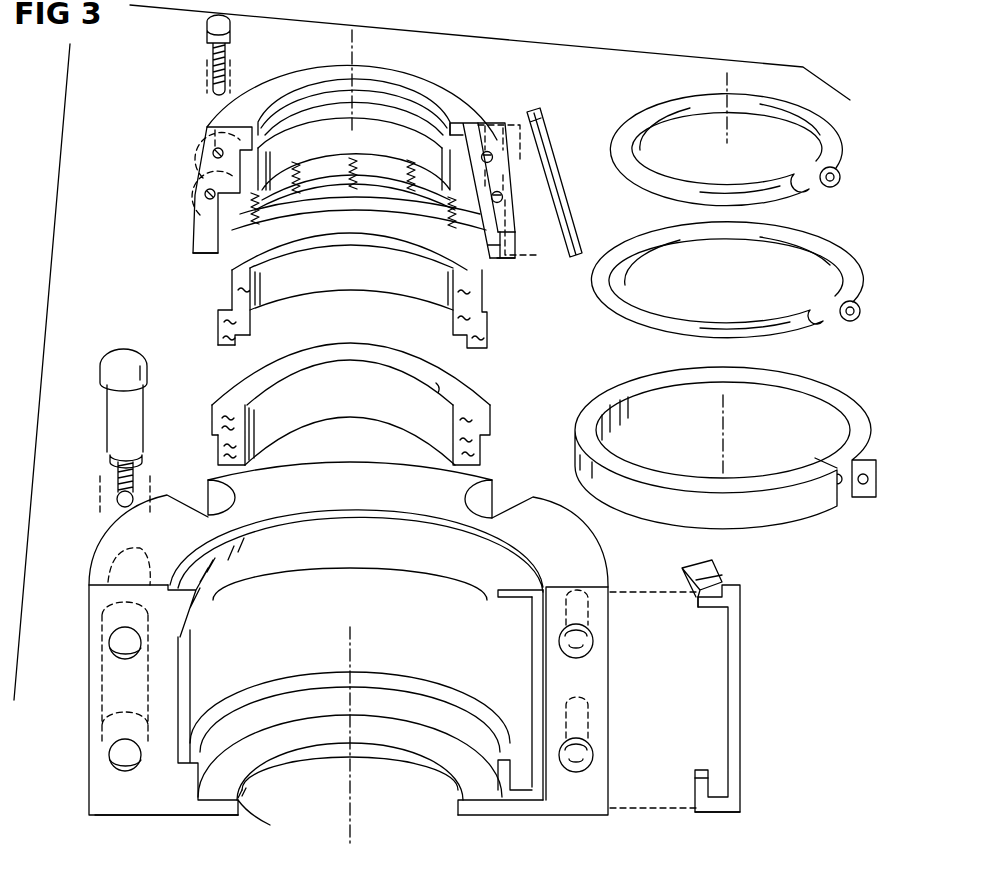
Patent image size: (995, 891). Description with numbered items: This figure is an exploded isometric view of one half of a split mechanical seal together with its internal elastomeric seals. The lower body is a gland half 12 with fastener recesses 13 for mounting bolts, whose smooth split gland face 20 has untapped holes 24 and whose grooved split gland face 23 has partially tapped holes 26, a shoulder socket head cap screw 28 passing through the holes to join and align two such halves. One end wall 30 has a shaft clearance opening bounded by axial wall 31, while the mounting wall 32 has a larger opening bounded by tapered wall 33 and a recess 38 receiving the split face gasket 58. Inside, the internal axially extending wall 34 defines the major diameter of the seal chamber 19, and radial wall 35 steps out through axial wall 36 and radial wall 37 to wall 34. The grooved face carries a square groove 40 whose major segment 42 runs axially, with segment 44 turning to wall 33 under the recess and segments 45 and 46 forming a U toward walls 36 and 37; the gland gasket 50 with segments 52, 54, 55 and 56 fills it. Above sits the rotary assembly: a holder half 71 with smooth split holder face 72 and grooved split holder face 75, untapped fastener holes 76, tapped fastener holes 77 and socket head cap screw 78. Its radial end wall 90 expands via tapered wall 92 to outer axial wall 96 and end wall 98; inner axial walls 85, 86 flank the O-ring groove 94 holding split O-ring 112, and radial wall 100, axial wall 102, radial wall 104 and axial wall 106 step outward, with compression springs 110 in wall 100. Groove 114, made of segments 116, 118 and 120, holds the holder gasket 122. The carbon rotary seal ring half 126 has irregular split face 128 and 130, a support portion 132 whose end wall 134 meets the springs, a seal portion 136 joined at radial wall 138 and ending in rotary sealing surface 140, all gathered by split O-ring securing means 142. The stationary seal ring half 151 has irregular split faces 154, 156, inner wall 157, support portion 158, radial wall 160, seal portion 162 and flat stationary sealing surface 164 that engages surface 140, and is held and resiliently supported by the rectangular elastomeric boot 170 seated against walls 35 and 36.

The gland half 12 is at (100, 540).
The fastener recess 13 is at (207, 497).
The seal chamber 19 is at (403, 652).
The smooth split gland face 20 is at (110, 820).
The grooved split gland face 23 is at (576, 810).
The untapped hole 24 is at (115, 653).
The partially tapped hole 26 is at (600, 652).
The shoulder socket head cap screw 28 is at (117, 432).
The end wall 30 is at (168, 818).
The axial wall 31 is at (246, 796).
The mounting wall 32 is at (92, 553).
The wall 33 is at (196, 600).
The internal axially extending wall 34 is at (190, 690).
The radial wall 35 is at (272, 752).
The axial wall 36 is at (278, 718).
The radial wall 37 is at (290, 690).
The recess 38 is at (298, 515).
The groove 40 is at (540, 693).
The major groove segment 42 is at (535, 712).
The groove segment 44 is at (513, 597).
The groove segment 45 is at (535, 802).
The groove segment 46 is at (506, 770).
The gland gasket 50 is at (744, 684).
The gasket segment 52 is at (742, 712).
The gasket segment 54 is at (715, 606).
The gasket segment 55 is at (718, 808).
The gasket segment 56 is at (700, 788).
The face gasket 58 is at (716, 576).
The holder half 71 is at (300, 67).
The smooth split holder face 72 is at (205, 238).
The grooved split holder face 75 is at (517, 256).
The untapped fastener hole 76 is at (212, 153).
The tapped fastener hole 77 is at (492, 156).
The socket head cap screw 78 is at (212, 60).
The inner axial wall 85 is at (385, 125).
The inner axial wall 86 is at (362, 92).
The radial end wall 90 is at (420, 82).
The tapered wall 92 is at (496, 135).
The O-ring groove 94 is at (300, 104).
The outer axial wall 96 is at (520, 240).
The end wall 98 is at (206, 256).
The radial wall 100 is at (330, 140).
The axial wall 102 is at (273, 186).
The radial wall 104 is at (342, 172).
The axial wall 106 is at (316, 196).
The compression spring 110 is at (404, 196).
The split O-ring 112 is at (655, 127).
The groove 114 is at (496, 224).
The groove segment 116 is at (470, 122).
The angled groove segment 118 is at (470, 181).
The groove segment 120 is at (498, 248).
The holder gasket 122 is at (563, 192).
The rotary seal ring half 126 is at (492, 336).
The irregular split face 128 is at (250, 308).
The irregular split face 130 is at (455, 305).
The support portion 132 is at (490, 296).
The end wall 134 is at (480, 270).
The seal portion 136 is at (222, 320).
The radial wall 138 is at (226, 306).
The rotary sealing surface 140 is at (226, 343).
The split O-ring securing means 142 is at (632, 262).
The stationary seal ring half 151 is at (490, 419).
The irregular split face 154 is at (245, 426).
The irregular split face 156 is at (460, 425).
The wall 157 is at (470, 386).
The support portion 158 is at (493, 447).
The radial wall 160 is at (220, 437).
The seal portion 162 is at (218, 418).
The stationary sealing surface 164 is at (226, 389).
The ring boot securing means 170 is at (660, 415).